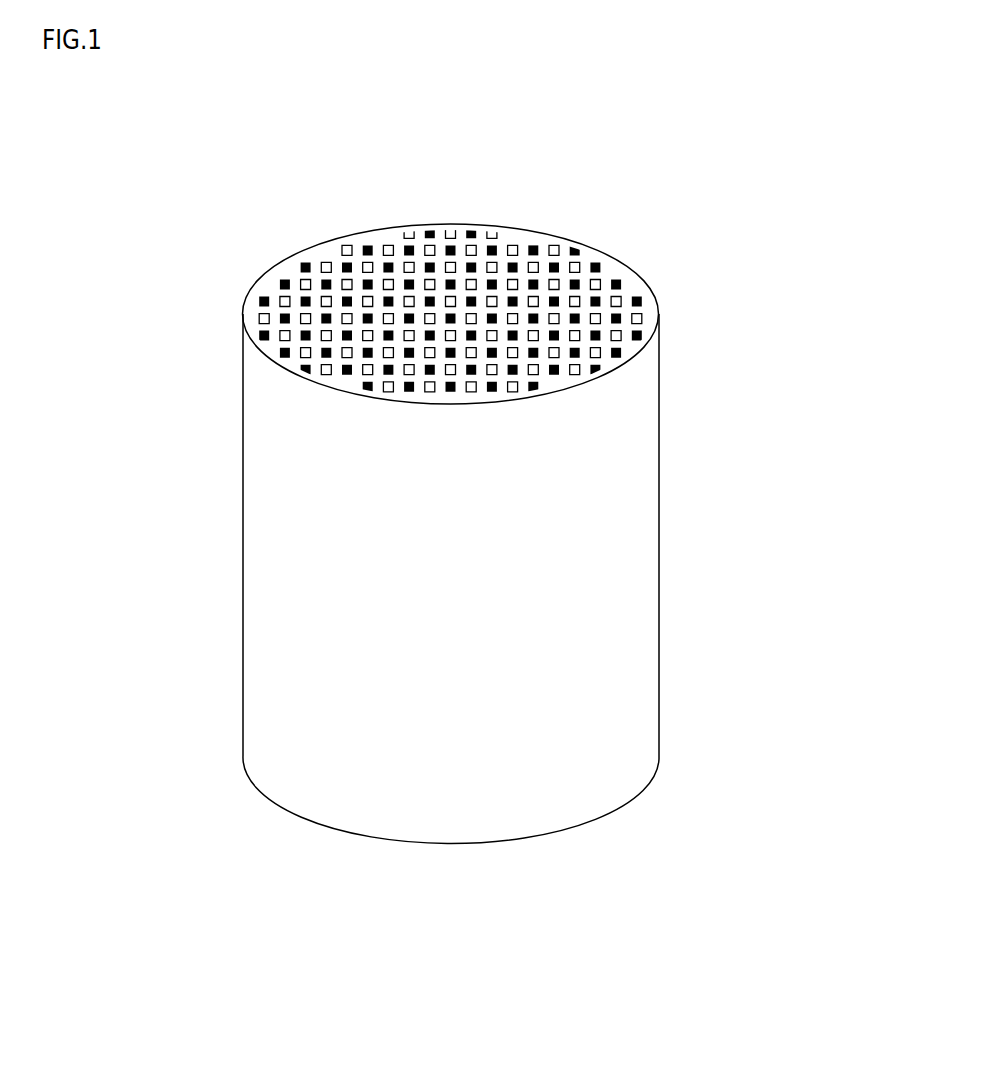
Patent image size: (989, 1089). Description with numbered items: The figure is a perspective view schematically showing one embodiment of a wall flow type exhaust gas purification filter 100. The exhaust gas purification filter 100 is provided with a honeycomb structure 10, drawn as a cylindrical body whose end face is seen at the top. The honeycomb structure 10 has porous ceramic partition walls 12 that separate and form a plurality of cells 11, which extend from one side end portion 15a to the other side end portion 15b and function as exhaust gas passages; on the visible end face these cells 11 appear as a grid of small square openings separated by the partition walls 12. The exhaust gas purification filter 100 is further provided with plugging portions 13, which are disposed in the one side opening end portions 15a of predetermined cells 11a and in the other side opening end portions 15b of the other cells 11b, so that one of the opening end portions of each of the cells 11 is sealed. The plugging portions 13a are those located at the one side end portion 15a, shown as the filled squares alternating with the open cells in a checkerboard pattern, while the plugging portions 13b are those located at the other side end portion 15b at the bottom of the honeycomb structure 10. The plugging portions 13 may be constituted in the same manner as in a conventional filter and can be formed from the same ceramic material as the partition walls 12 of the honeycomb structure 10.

The exhaust gas purification filter 100 is at (718, 86).
The honeycomb structure 10 is at (660, 555).
The cells 11 is at (406, 272).
The predetermined cells 11a is at (362, 246).
The other cells 11b is at (323, 262).
The partition walls 12 is at (586, 252).
The plugging portions 13 is at (513, 179).
The plugging portions at one side opening end portions 13a is at (529, 247).
The plugging portions at the other side opening end portions 13b is at (558, 828).
The one side end portion 15a is at (426, 224).
The other side end portion 15b is at (368, 845).